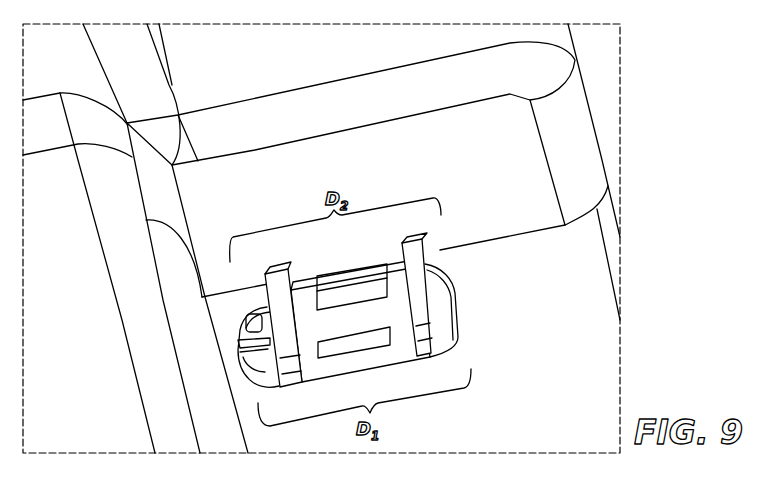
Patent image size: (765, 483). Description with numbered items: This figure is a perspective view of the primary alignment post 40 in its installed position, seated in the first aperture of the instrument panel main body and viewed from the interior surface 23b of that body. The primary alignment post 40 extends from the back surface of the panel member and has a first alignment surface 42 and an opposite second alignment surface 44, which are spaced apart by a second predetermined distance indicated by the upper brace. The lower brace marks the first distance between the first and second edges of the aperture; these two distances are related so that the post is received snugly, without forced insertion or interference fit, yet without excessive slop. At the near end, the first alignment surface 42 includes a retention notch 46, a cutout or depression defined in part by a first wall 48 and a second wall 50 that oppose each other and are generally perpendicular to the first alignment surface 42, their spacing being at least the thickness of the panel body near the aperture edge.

The primary alignment post 40 is at (329, 336).
The first alignment surface 42 is at (248, 368).
The second alignment surface 44 is at (460, 327).
The retention notch 46 is at (246, 336).
The first wall 48 is at (250, 373).
The second wall 50 is at (248, 352).
The interior surface 23b is at (568, 387).